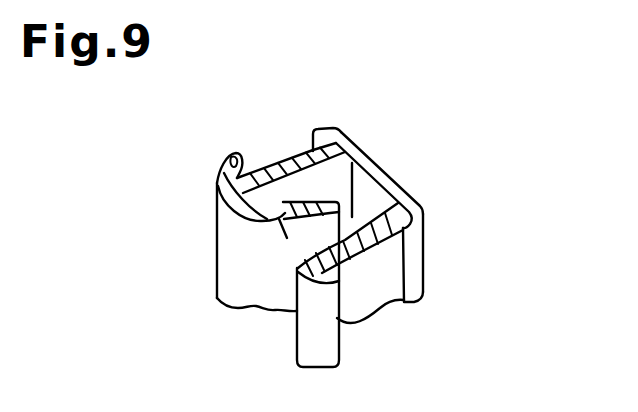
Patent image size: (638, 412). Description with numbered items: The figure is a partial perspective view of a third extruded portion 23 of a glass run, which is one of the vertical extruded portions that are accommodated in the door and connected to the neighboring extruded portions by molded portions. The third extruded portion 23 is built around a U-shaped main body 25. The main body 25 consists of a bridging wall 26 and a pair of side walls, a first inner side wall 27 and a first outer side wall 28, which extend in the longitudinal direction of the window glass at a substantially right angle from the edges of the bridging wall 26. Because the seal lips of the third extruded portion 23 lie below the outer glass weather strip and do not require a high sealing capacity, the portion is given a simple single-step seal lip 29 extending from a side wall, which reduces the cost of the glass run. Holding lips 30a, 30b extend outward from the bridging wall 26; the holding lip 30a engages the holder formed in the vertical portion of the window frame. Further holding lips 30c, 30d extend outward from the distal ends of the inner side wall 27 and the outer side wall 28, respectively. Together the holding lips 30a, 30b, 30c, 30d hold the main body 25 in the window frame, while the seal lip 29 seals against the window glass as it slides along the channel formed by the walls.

The third extruded portion 23 is at (425, 234).
The main body 25 is at (394, 181).
The bridging wall 26 is at (366, 155).
The first inner side wall 27 is at (257, 172).
The first outer side wall 28 is at (384, 306).
The seal lip 29 is at (297, 232).
The holding lip 30a is at (320, 128).
The holding lip 30b is at (408, 281).
The holding lip 30c is at (235, 155).
The holding lip 30d is at (336, 317).